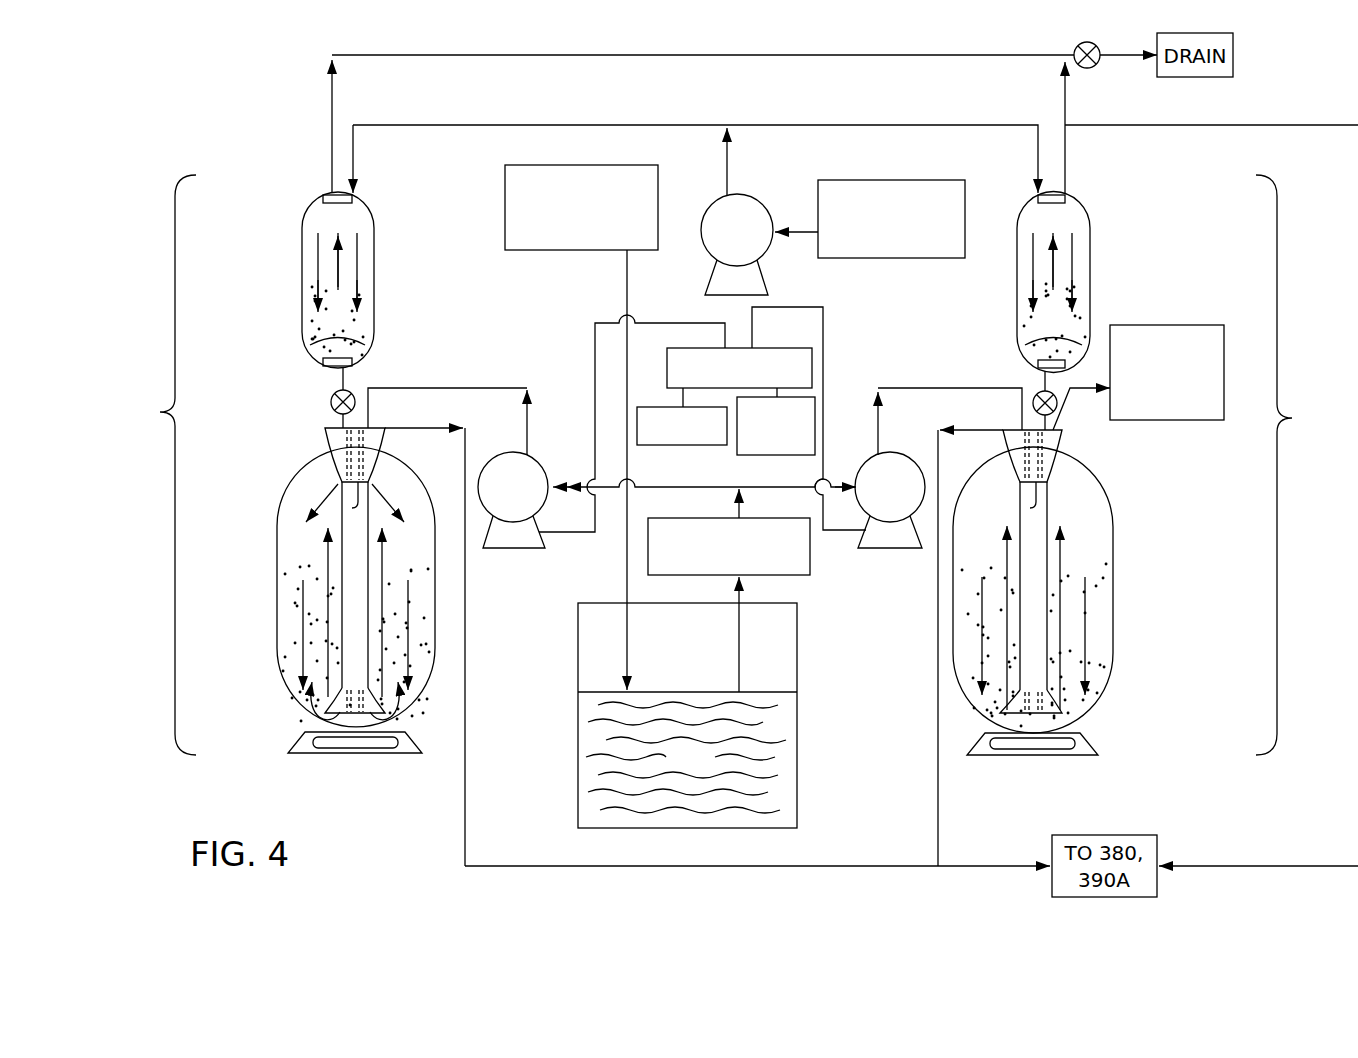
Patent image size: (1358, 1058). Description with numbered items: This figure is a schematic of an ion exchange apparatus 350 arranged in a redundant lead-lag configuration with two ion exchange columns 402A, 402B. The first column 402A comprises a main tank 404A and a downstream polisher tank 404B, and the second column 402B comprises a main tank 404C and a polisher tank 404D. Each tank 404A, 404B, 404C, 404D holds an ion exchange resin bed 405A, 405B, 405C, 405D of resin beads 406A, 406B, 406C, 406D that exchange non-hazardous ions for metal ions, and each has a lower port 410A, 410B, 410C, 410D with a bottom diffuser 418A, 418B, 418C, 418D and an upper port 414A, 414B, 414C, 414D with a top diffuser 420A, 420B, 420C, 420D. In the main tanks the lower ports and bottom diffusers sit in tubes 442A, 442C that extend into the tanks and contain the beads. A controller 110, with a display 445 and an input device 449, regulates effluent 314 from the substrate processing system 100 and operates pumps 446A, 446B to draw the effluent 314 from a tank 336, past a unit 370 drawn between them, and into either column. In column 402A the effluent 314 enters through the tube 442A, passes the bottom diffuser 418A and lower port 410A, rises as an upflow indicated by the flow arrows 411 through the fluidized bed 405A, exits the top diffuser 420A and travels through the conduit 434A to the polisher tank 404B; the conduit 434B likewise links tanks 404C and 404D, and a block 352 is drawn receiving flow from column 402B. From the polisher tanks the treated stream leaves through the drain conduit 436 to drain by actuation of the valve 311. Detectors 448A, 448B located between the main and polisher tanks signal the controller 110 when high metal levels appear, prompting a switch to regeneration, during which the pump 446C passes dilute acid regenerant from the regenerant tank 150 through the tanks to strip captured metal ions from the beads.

The ion exchange apparatus 350 is at (198, 108).
The return line 436 is at (648, 56).
The valve 311 is at (1087, 68).
The substrate processing system 100 is at (563, 220).
The controller 110 is at (721, 380).
The display 445 is at (664, 438).
The input device 449 is at (758, 438).
The regenerant tank 150 is at (898, 180).
The sensor module 370 is at (711, 559).
The effluent 314 is at (668, 769).
The tank 336 is at (797, 748).
The outlet module 352 is at (1149, 384).
The first ion exchange column 402A is at (142, 465).
The second ion exchange column 402B is at (1307, 465).
The main tank 404A is at (278, 582).
The polisher tank 404B is at (303, 246).
The main tank 404C is at (1113, 581).
The polisher tank 404D is at (1091, 246).
The ion exchange resin bed 405A is at (290, 617).
The ion exchange resin bed 405B is at (367, 292).
The ion exchange resin bed 405C is at (1098, 608).
The ion exchange resin bed 405D is at (1080, 264).
The resin beads 406A is at (290, 654).
The resin beads 406B is at (360, 306).
The resin beads 406C is at (1098, 642).
The resin beads 406D is at (1090, 294).
The lower port 410A is at (348, 688).
The lower port 410B is at (305, 348).
The lower port 410C is at (1036, 678).
The lower port 410D is at (1085, 325).
The flow direction 411 is at (330, 546).
The upper port 414A is at (350, 502).
The upper port 414B is at (318, 213).
The upper port 414C is at (1040, 492).
The upper port 414D is at (1038, 206).
The bottom diffuser 418A is at (352, 712).
The bottom diffuser 418B is at (356, 363).
The bottom diffuser 418C is at (1062, 714).
The bottom diffuser 418D is at (1030, 364).
The top diffuser 420A is at (340, 474).
The top diffuser 420B is at (366, 197).
The top diffuser 420C is at (1050, 466).
The top diffuser 420D is at (1068, 202).
The conduit 434A is at (358, 382).
The conduit 434B is at (1040, 382).
The tube 442A is at (372, 608).
The tube 442C is at (1047, 506).
The pump 446A is at (548, 466).
The pump 446B is at (894, 452).
The pump 446C is at (744, 196).
The detector 448A is at (330, 408).
The detector 448B is at (1033, 404).